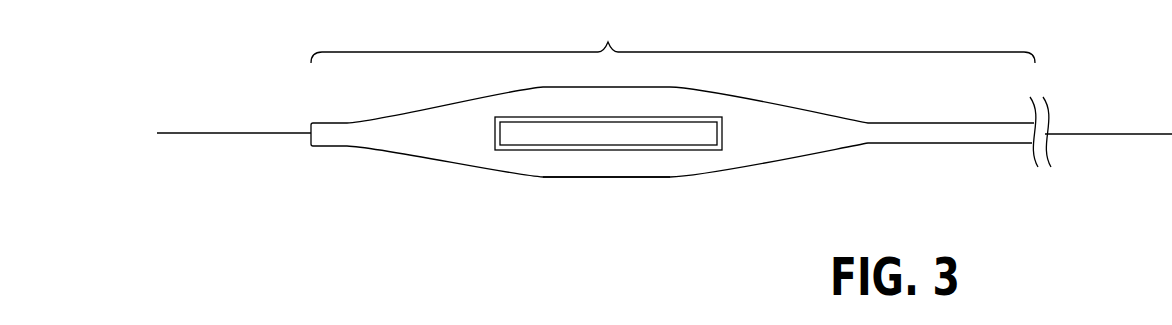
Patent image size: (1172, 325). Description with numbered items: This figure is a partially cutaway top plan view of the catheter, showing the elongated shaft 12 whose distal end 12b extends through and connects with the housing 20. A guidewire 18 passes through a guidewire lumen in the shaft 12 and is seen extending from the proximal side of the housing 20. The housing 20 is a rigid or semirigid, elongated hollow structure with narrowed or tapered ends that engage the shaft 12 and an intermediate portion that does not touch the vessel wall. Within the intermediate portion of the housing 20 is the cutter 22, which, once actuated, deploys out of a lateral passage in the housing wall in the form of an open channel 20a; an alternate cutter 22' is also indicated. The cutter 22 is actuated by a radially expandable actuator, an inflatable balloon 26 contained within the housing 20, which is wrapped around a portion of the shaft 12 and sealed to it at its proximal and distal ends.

The shaft 12 is at (955, 143).
The distal end 12b is at (673, 38).
The guidewire 18 is at (228, 134).
The housing 20 is at (607, 177).
The open channel 20a is at (520, 150).
The cutter 22 is at (608, 174).
The alternate electrode assembly 22' is at (412, 294).
The inflatable balloon 26 is at (1137, 134).